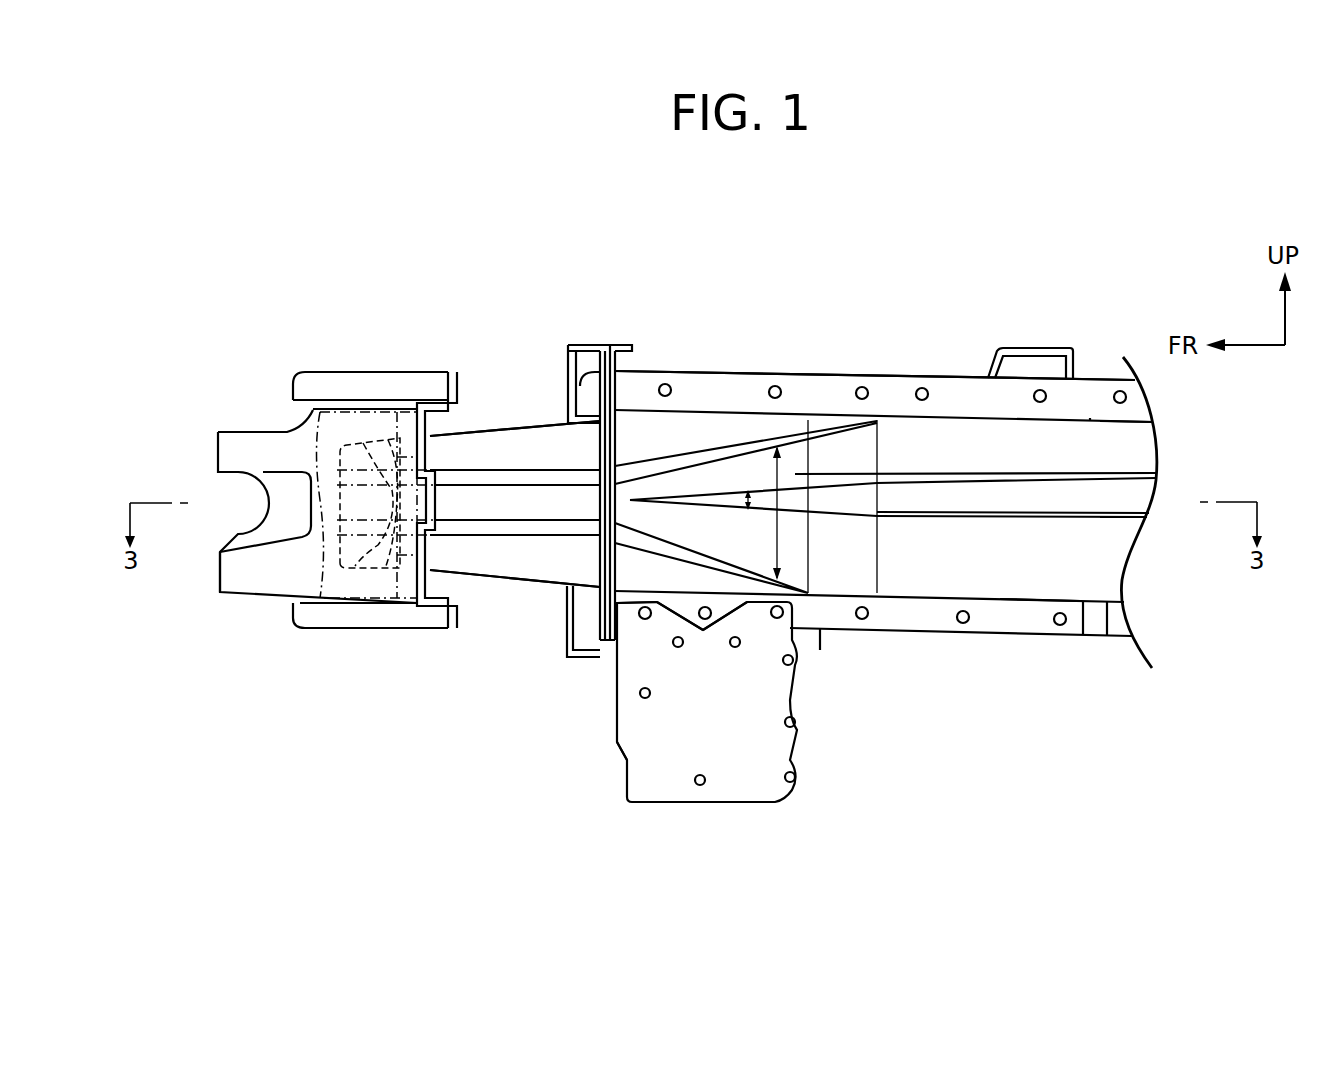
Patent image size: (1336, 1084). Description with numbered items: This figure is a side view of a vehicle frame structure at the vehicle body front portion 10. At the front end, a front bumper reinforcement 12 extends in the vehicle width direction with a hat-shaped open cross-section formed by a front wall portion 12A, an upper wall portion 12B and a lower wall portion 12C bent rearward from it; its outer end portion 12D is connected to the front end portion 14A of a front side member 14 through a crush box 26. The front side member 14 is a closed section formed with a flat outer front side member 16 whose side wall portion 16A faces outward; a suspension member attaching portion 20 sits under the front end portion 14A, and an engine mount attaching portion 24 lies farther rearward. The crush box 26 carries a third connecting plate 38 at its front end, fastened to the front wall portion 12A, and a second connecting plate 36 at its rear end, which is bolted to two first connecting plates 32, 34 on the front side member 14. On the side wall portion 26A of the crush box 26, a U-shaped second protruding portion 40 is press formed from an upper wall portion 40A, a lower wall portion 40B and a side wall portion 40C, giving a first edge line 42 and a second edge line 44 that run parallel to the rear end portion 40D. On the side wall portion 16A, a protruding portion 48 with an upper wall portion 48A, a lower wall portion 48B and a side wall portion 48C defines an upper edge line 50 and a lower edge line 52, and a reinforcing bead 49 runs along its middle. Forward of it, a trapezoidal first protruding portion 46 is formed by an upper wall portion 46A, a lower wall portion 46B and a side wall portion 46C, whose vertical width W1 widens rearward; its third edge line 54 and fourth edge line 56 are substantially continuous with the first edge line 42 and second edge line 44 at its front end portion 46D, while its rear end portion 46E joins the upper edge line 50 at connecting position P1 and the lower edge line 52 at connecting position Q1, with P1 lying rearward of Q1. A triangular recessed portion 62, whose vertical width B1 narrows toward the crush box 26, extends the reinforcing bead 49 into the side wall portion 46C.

The vehicle body front portion 10 is at (292, 308).
The front bumper reinforcement 12 is at (208, 587).
The front wall portion 12A is at (250, 580).
The upper wall portion 12B is at (375, 372).
The lower wall portion 12C is at (357, 612).
The end portion 12D is at (268, 422).
The front side member 14 is at (796, 368).
The front end portion 14A is at (735, 409).
The outer front side member 16 is at (1026, 645).
The side wall portion 16A is at (1048, 578).
The suspension member attaching portion 20 is at (668, 806).
The engine mount attaching portion 24 is at (1030, 347).
The crush box 26 is at (442, 590).
The side wall portion 26A is at (573, 453).
The first connecting plate 32 is at (620, 343).
The first connecting plate 34 is at (605, 345).
The second connecting plate 36 is at (597, 352).
The third connecting plate 38 is at (298, 603).
The second protruding portion 40 is at (457, 474).
The upper wall portion 40A is at (530, 477).
The lower wall portion 40B is at (467, 527).
The side wall portion 40C is at (515, 500).
The end portion 40D is at (590, 503).
The first edge line 42 is at (493, 483).
The second edge line 44 is at (502, 522).
The first protruding portion 46 is at (620, 734).
The upper wall portion 46A is at (653, 462).
The lower wall portion 46B is at (705, 615).
The side wall portion 46C is at (745, 602).
The end portion 46D is at (627, 672).
The end portion 46E is at (807, 497).
The protruding portion 48 is at (1072, 410).
The upper wall portion 48A is at (1120, 421).
The lower wall portion 48B is at (1107, 605).
The side wall portion 48C is at (1103, 562).
The reinforcing bead 49 is at (1140, 500).
The upper edge line 50 is at (1090, 418).
The lower edge line 52 is at (1083, 607).
The third edge line 54 is at (755, 440).
The fourth edge line 56 is at (795, 600).
The recessed portion 62 is at (800, 558).
The vertical width B1 is at (748, 488).
The vertical width W1 is at (808, 420).
The connecting position P1 is at (880, 420).
The connecting position Q1 is at (818, 622).